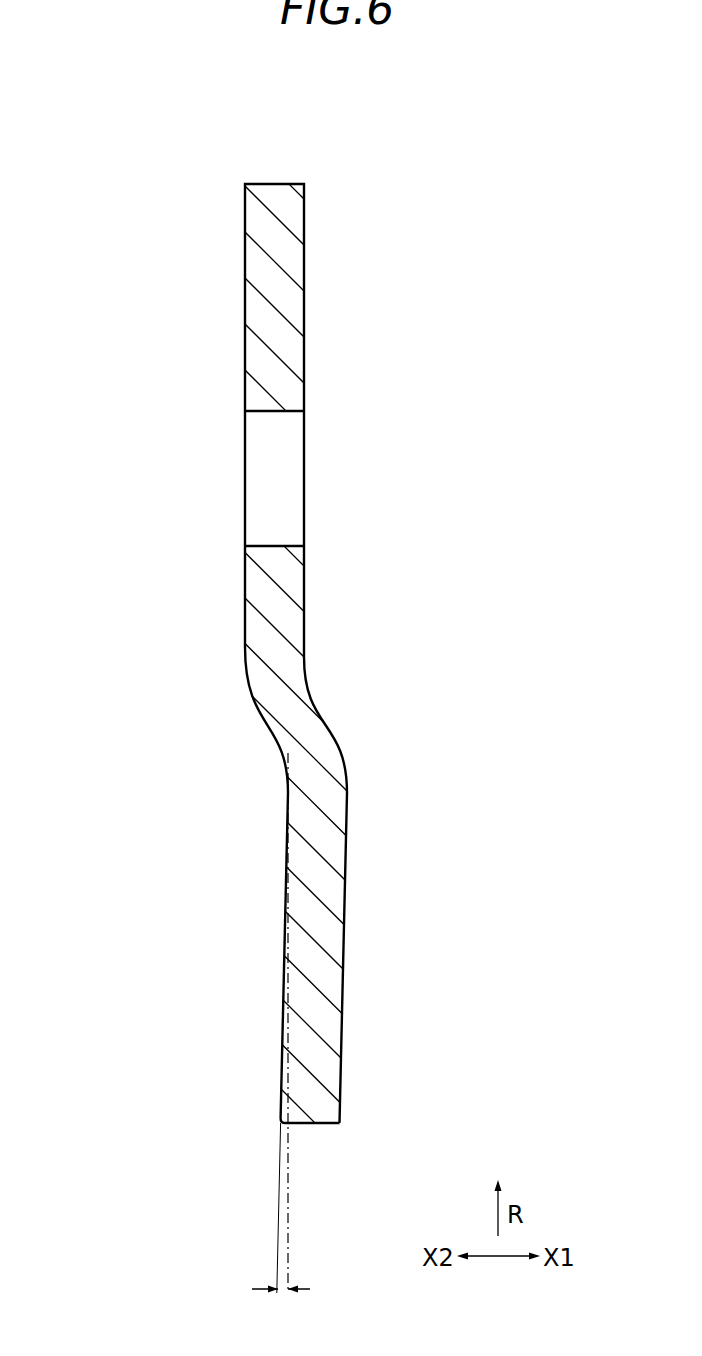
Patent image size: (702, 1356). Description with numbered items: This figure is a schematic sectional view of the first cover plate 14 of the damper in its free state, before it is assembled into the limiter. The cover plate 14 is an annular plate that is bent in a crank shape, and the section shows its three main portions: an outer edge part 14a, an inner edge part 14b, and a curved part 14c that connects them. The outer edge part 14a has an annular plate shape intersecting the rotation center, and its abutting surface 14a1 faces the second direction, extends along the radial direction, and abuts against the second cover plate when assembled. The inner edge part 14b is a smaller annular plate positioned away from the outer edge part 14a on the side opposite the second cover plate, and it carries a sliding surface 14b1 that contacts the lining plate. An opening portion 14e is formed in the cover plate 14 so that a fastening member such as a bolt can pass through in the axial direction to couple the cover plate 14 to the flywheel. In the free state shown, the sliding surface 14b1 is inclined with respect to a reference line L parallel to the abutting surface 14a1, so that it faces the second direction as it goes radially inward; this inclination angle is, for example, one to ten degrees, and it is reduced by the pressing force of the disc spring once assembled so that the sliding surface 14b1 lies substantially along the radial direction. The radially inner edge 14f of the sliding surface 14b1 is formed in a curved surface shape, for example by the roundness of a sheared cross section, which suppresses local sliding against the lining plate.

The cover plate 14 is at (317, 167).
The outer edge part 14a is at (180, 284).
The abutting surface 14a1 is at (243, 304).
The inner edge part 14b is at (223, 969).
The sliding surface 14b1 is at (284, 973).
The curved part 14c is at (328, 733).
The opening portion 14e is at (278, 475).
The radially inner edge 14f is at (280, 1124).
The reference line L is at (290, 1177).